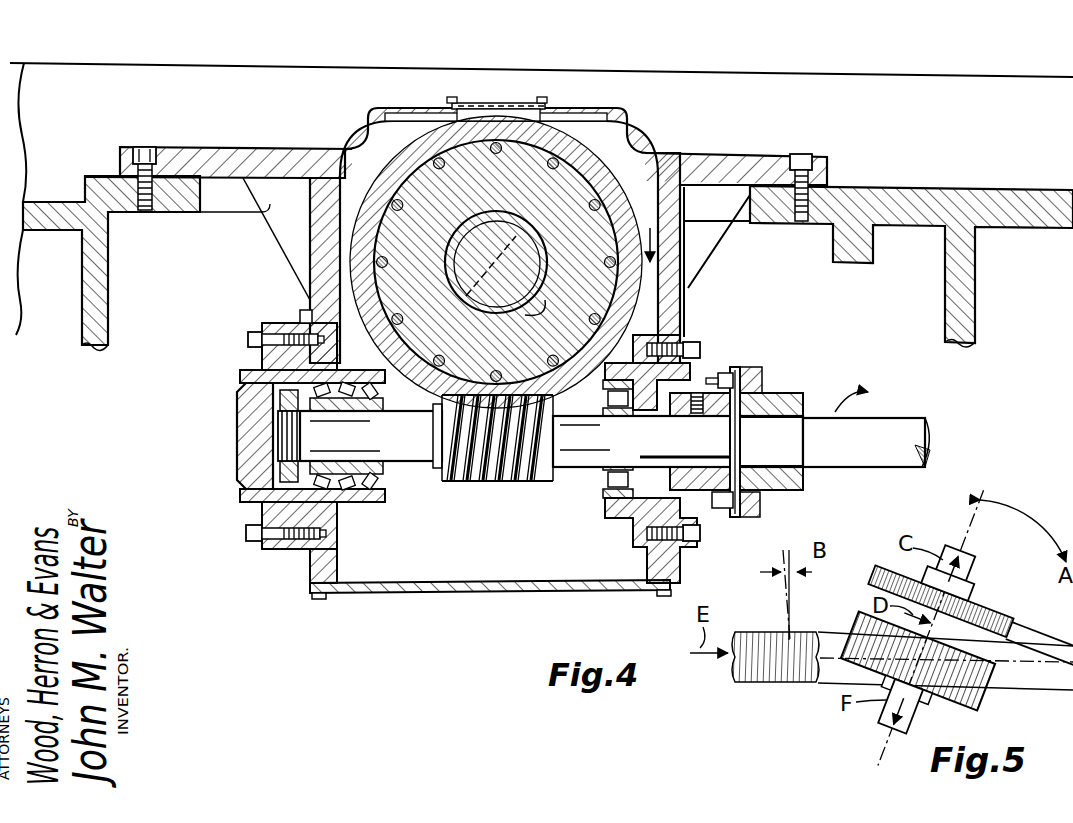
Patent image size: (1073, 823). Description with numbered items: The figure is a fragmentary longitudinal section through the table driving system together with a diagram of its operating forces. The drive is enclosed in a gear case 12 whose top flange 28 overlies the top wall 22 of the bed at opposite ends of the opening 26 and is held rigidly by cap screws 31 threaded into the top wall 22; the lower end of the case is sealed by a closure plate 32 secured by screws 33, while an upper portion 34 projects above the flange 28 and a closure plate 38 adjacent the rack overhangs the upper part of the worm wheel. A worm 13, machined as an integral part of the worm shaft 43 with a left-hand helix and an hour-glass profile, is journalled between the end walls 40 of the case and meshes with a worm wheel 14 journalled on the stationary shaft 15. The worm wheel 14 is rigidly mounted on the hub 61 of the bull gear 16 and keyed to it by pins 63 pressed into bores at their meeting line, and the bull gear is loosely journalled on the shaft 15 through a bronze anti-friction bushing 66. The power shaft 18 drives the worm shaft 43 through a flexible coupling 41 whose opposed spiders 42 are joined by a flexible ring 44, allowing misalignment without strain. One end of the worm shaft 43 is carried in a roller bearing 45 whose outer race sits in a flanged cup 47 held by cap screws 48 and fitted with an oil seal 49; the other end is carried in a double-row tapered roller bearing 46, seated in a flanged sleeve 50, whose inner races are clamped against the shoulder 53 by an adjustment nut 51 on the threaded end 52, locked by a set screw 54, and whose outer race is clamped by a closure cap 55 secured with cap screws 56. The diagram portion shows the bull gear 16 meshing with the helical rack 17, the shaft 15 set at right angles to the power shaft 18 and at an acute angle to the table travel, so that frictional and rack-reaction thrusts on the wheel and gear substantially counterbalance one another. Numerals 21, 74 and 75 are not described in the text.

In FIG. 4, the gear case 12 is at (316, 147).
In FIG. 4, the worm 13 is at (508, 482).
In FIG. 4, the worm wheel 14 is at (340, 213).
In FIG. 5, the worm wheel 14 is at (872, 570).
In FIG. 4, the stationary shaft 15 is at (523, 248).
In FIG. 5, the stationary shaft 15 is at (972, 580).
In FIG. 5, the helical rack pinion (bull gear) 16 is at (976, 700).
In FIG. 5, the helical rack 17 is at (758, 672).
In FIG. 4, the power shaft 18 is at (910, 418).
In FIG. 5, the power shaft 18 is at (1040, 632).
In FIG. 4, the bracket leg 21 is at (85, 326).
In FIG. 4, the top wall 22 is at (95, 178).
In FIG. 4, the opening 26 is at (222, 197).
In FIG. 4, the top flange 28 is at (242, 150).
In FIG. 4, the cap screws 31 is at (144, 155).
In FIG. 4, the closure plate 32 is at (483, 592).
In FIG. 4, the screws 33 is at (320, 600).
In FIG. 4, the upper portion 34 is at (414, 107).
In FIG. 4, the closure plate 38 is at (496, 101).
In FIG. 4, the end walls 40 is at (311, 264).
In FIG. 4, the flexible coupling 41 is at (801, 390).
In FIG. 4, the spiders 42 is at (752, 368).
In FIG. 4, the worm shaft 43 is at (718, 436).
In FIG. 4, the flexible ring 44 is at (740, 440).
In FIG. 4, the roller bearing 45 is at (604, 480).
In FIG. 4, the roller bearing 46 is at (378, 500).
In FIG. 4, the flanged cup 47 is at (700, 376).
In FIG. 4, the cap screws 48 is at (692, 342).
In FIG. 4, the oil seal 49 is at (650, 415).
In FIG. 4, the flanged sleeve 50 is at (304, 320).
In FIG. 4, the adjustment nut 51 is at (272, 478).
In FIG. 4, the threaded end 52 is at (285, 436).
In FIG. 4, the shoulder 53 is at (388, 433).
In FIG. 4, the set screw 54 is at (283, 392).
In FIG. 4, the closure cap 55 is at (237, 430).
In FIG. 4, the cap screws 56 is at (254, 331).
In FIG. 4, the hub 61 is at (603, 182).
In FIG. 4, the pins 63 is at (437, 165).
In FIG. 4, the anti-friction bushing 66 is at (540, 318).
In FIG. 4, the shaft bore 74 is at (505, 244).
In FIG. 4, the worm wheel hub 75 is at (455, 315).